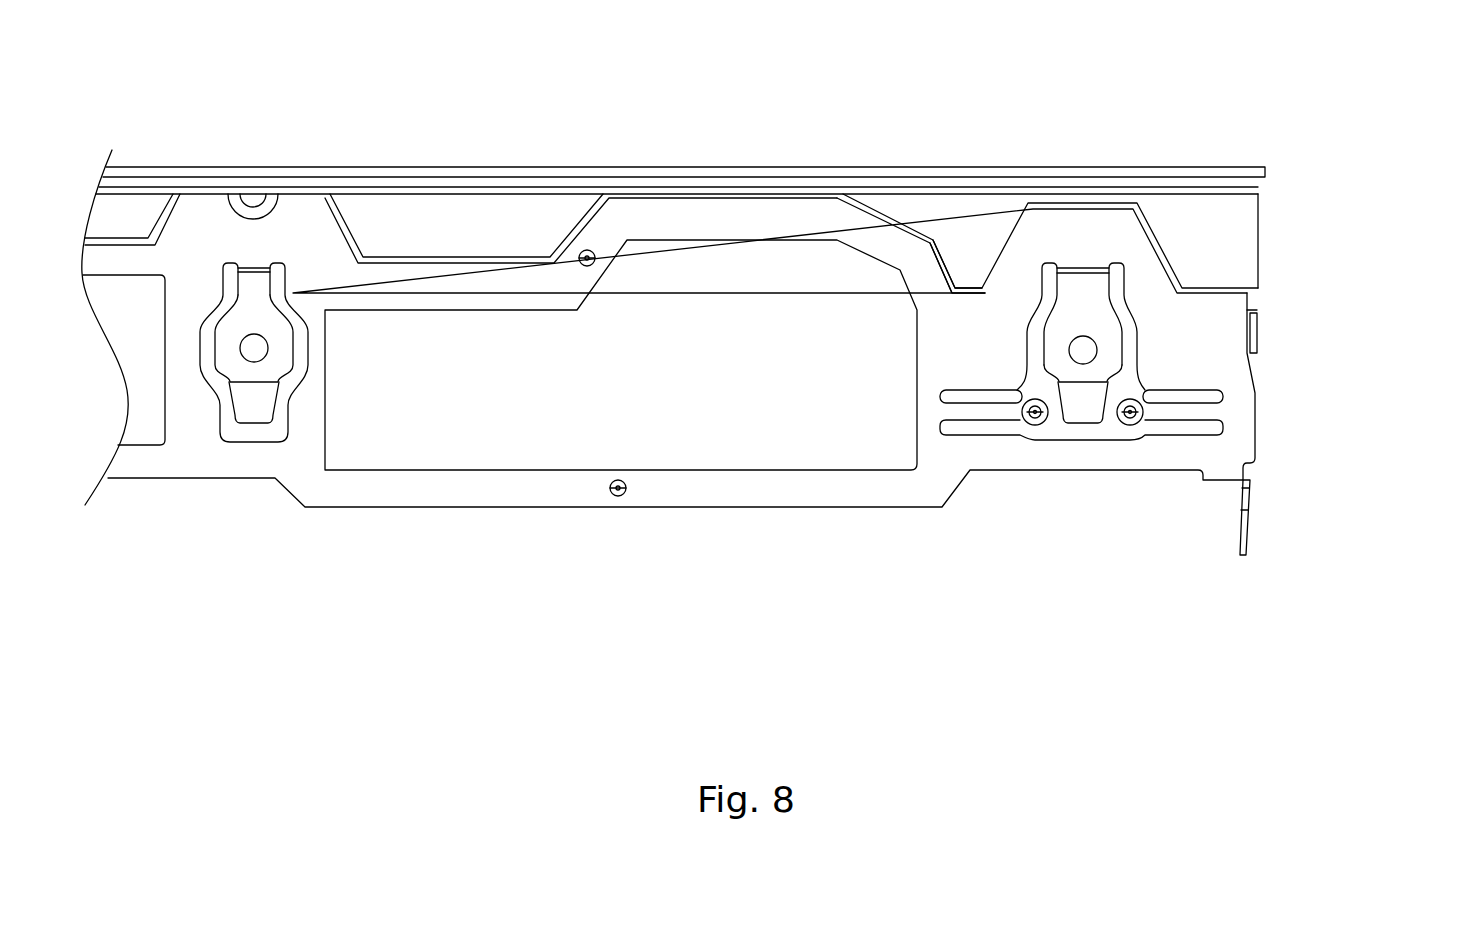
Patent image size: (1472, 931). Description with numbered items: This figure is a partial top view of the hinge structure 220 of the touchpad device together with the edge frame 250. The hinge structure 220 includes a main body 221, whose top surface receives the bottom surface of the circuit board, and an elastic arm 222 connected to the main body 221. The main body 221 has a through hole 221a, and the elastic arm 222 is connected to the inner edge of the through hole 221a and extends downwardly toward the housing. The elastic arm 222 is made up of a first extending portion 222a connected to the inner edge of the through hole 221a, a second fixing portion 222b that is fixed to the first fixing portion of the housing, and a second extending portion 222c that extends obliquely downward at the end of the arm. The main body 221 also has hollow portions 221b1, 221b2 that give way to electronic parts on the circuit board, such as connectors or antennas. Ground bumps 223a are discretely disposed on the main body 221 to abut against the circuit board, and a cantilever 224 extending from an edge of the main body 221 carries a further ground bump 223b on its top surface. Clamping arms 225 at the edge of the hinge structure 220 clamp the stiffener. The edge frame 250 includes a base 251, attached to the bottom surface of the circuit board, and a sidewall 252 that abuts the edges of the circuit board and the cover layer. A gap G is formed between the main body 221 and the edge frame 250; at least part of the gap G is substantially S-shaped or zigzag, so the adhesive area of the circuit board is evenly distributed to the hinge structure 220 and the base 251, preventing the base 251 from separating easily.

The hinge structure 220 is at (1300, 465).
The main body 221 is at (1082, 237).
The through hole 221a is at (1036, 292).
The hollow portion 221b1 is at (736, 236).
The hollow portion 221b2 is at (122, 272).
The elastic arm 222 is at (1234, 343).
The first extending portion 222a is at (1087, 295).
The second fixing portion 222b is at (1107, 348).
The second extending portion 222c is at (1082, 412).
The ground bump 223a is at (618, 497).
The ground bump 223b is at (1127, 418).
The cantilever 224 is at (1188, 410).
The clamping arm 225 is at (1258, 523).
The edge frame 250 is at (592, 58).
The base 251 is at (427, 228).
The sidewall 252 is at (553, 183).
The gap G is at (913, 220).